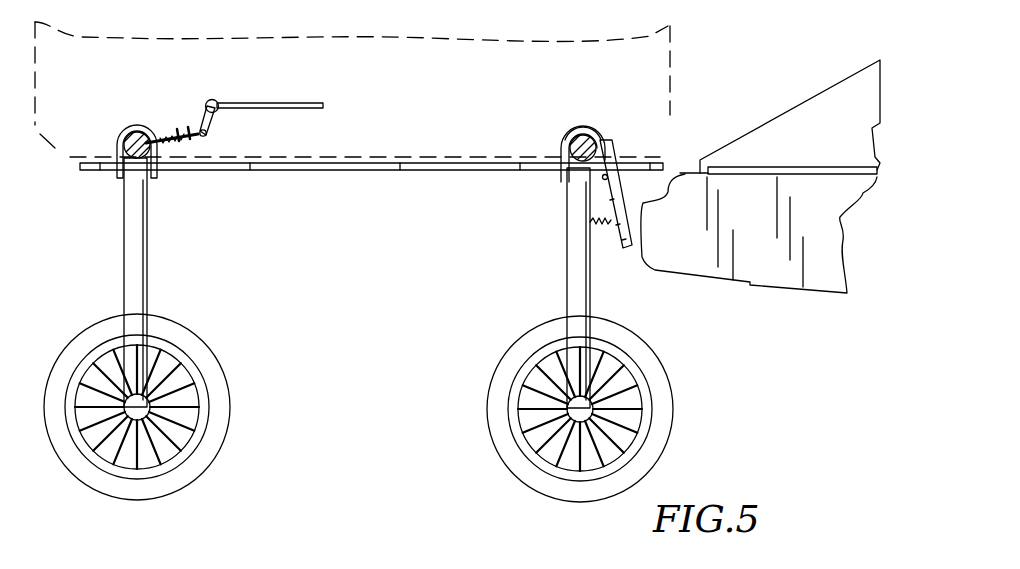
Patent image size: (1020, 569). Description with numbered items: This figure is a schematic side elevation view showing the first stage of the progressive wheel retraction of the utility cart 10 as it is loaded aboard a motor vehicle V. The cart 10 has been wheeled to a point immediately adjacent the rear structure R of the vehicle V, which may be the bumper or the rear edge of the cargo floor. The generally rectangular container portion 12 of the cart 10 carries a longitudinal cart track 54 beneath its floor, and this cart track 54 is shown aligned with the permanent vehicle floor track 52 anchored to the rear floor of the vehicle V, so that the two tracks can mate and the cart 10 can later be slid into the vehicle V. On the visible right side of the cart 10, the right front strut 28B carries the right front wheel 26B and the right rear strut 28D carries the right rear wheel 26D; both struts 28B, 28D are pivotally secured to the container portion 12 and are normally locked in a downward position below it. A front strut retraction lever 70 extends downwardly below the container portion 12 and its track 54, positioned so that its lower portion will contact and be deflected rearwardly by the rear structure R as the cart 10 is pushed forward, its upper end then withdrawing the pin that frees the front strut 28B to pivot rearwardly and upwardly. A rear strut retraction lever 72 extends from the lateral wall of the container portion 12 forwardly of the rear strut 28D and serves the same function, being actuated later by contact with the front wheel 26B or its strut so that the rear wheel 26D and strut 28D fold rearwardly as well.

The utility cart 10 is at (710, 433).
The container portion 12 is at (670, 70).
The right front wheel 26B is at (490, 443).
The right rear wheel 26D is at (230, 385).
The right front strut 28B is at (567, 262).
The right rear strut 28D is at (148, 263).
The vehicle floor track 52 is at (792, 167).
The cart track 54 is at (338, 170).
The front strut retraction lever 70 is at (624, 252).
The rear strut retraction lever 72 is at (273, 103).
The motor vehicle V is at (830, 70).
The rear structure R is at (750, 283).